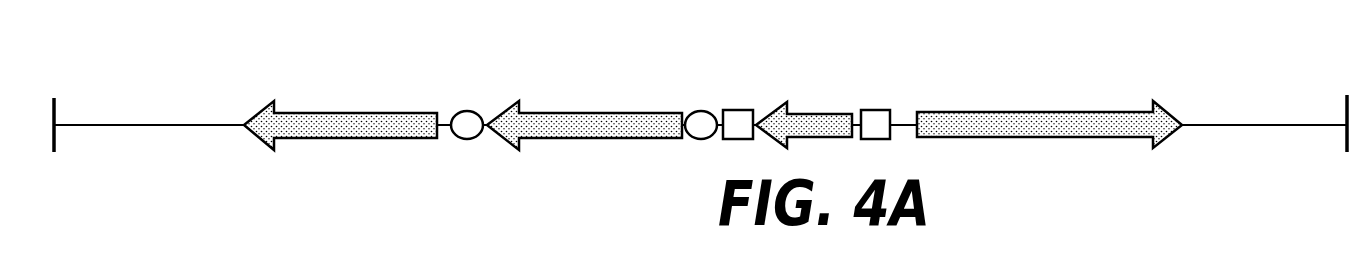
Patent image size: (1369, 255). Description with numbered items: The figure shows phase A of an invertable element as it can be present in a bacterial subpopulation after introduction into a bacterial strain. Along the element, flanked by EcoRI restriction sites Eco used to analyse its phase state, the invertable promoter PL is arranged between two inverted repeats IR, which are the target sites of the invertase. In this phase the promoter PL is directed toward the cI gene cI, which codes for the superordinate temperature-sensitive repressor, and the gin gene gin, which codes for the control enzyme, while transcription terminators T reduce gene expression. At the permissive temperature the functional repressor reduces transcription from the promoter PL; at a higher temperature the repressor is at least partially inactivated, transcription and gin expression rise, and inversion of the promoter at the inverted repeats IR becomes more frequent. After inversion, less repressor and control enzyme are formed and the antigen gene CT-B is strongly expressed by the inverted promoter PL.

The EcoRI restriction sites Eco is at (222, 125).
The gin gene gin is at (340, 114).
The transcription terminators T is at (584, 109).
The cI gene cI is at (584, 115).
The inverted repeats IR is at (806, 109).
The invertable promoter PL is at (804, 114).
The antigen gene CT-B is at (1049, 114).